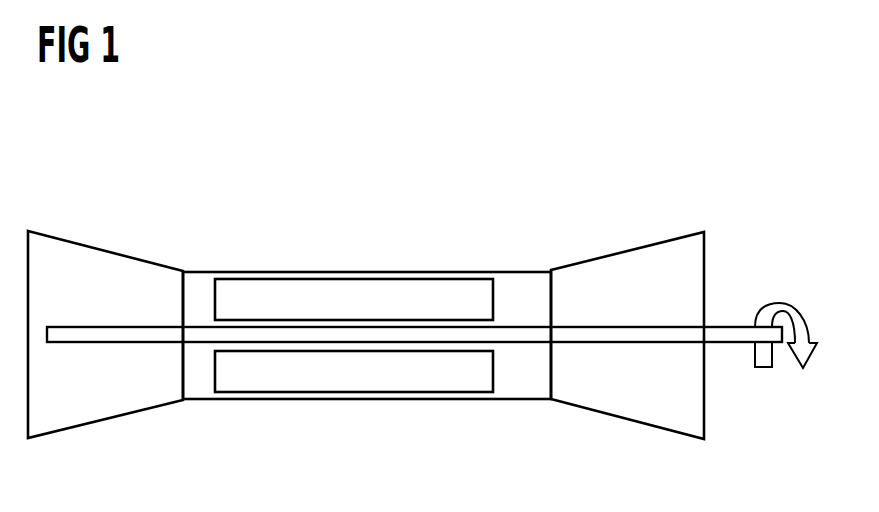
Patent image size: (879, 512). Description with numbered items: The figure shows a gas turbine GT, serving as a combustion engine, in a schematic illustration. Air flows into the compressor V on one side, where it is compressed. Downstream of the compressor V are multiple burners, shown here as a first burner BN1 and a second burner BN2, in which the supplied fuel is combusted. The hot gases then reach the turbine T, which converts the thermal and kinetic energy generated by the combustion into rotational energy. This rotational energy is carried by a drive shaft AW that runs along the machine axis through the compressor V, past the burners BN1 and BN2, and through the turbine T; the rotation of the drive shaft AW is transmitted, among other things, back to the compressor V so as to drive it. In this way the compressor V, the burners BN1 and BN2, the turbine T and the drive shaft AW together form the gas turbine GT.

The gas turbine GT is at (684, 130).
The compressor V is at (92, 424).
The turbine T is at (641, 424).
The burner BN1 is at (354, 299).
The burner BN2 is at (354, 371).
The drive shaft AW is at (731, 327).